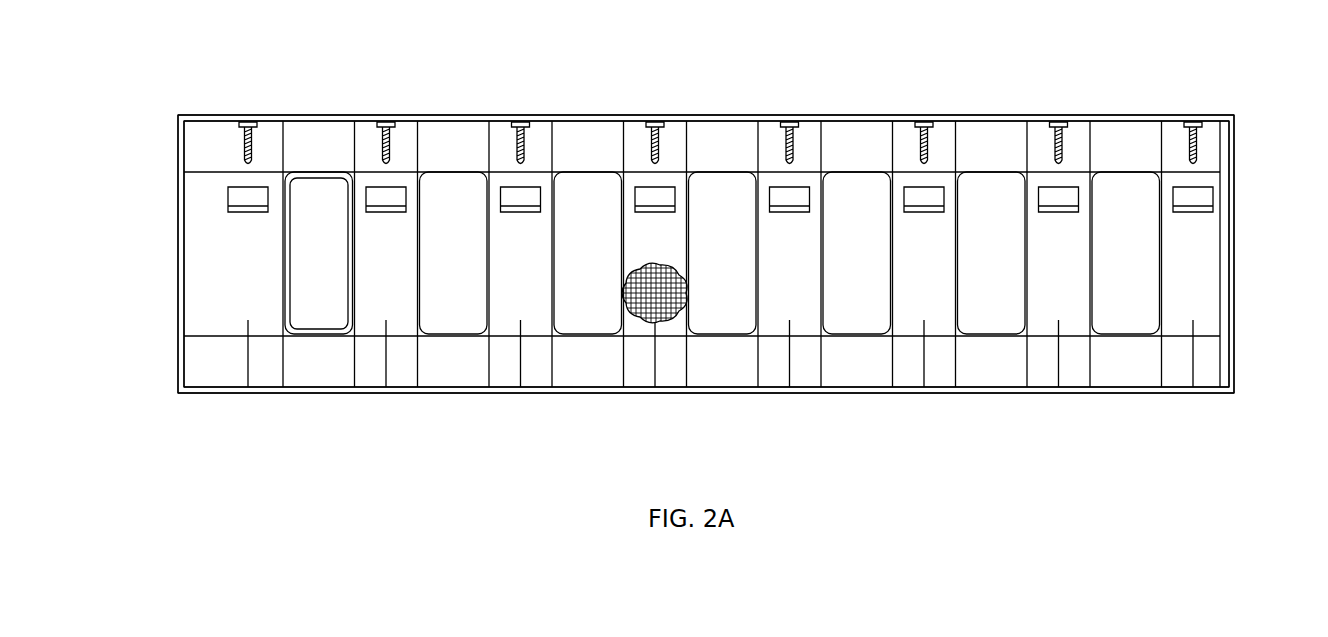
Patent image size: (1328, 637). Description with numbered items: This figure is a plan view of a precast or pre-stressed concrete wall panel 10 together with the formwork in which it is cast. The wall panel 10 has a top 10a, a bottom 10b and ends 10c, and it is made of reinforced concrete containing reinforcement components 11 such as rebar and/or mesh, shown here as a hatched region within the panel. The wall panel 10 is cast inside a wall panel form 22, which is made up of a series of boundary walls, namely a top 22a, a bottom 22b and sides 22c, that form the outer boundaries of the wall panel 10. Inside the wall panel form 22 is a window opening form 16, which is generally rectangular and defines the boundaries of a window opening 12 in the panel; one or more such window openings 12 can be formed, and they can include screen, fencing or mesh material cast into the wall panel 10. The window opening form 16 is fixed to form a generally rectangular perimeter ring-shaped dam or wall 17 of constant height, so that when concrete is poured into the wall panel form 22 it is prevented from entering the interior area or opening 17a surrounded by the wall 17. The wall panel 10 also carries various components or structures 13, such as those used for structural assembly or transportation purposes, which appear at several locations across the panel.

The wall panel 10 is at (1212, 248).
The top 10a is at (445, 122).
The bottom 10b is at (462, 382).
The ends 10c is at (1220, 207).
The reinforcement components 11 is at (667, 323).
The window opening 12 is at (1133, 276).
The components or structures 13 is at (245, 147).
The window opening form 16 is at (300, 196).
The wall 17 is at (290, 310).
The interior area or opening 17a is at (322, 299).
The wall panel form 22 is at (710, 115).
The top 22a is at (854, 115).
The bottom 22b is at (852, 393).
The sides 22c is at (178, 146).